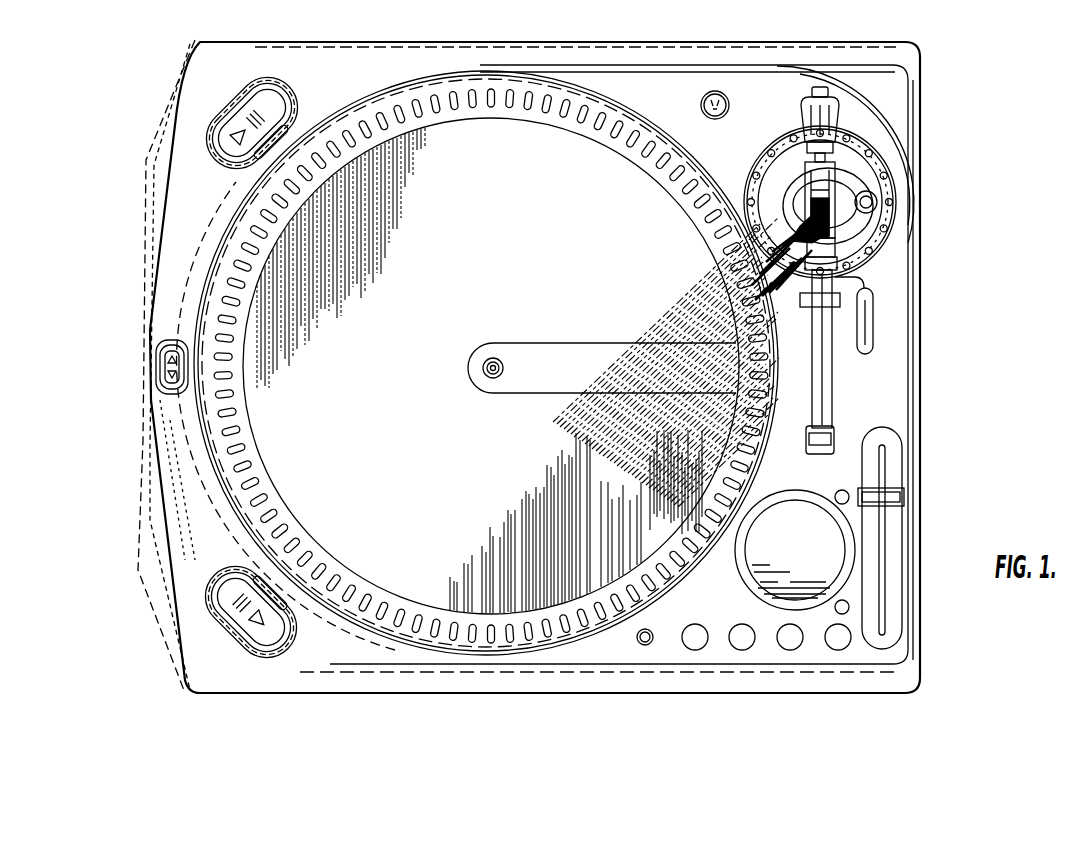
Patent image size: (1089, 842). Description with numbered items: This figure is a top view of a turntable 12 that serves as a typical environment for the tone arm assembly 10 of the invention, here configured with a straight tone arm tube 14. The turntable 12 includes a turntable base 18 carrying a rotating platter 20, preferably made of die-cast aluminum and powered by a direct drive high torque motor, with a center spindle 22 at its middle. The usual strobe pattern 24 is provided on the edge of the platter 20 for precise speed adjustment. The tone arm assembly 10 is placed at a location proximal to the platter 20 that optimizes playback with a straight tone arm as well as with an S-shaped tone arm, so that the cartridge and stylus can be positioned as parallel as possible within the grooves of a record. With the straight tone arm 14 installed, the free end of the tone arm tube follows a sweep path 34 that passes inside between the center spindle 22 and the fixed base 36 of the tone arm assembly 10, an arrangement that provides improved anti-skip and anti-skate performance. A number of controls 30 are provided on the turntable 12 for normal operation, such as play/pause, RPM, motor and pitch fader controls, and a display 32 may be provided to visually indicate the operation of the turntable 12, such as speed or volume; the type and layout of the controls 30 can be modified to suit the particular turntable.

The tone arm assembly 10 is at (573, 366).
The turntable 12 is at (918, 103).
The straight tone arm tube 14 is at (832, 392).
The turntable base 18 is at (868, 202).
The platter 20 is at (560, 160).
The center spindle 22 is at (492, 357).
The strobe pattern 24 is at (585, 633).
The controls 30 is at (263, 645).
The display 32 is at (808, 578).
The sweep path 34 is at (703, 468).
The fixed base 36 is at (895, 180).